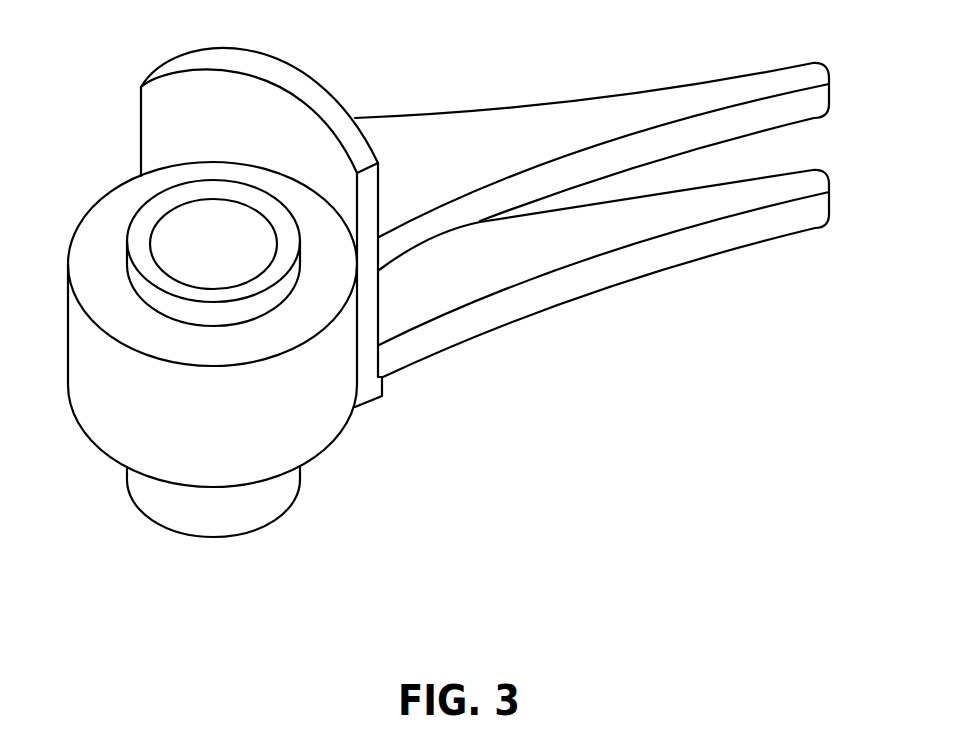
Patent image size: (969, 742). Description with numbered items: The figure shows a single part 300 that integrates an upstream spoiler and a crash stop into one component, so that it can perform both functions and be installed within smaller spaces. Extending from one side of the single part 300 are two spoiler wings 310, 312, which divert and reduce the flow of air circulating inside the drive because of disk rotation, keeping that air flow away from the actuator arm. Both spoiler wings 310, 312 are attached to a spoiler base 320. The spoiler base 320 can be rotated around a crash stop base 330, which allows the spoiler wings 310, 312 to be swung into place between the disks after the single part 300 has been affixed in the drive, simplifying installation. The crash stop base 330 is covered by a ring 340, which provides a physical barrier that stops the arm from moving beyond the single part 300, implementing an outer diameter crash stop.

The single part 300 is at (435, 308).
The spoiler wing 310 is at (503, 108).
The spoiler wing 312 is at (560, 280).
The spoiler base 320 is at (141, 125).
The crash stop base 330 is at (272, 525).
The ring 340 is at (307, 410).